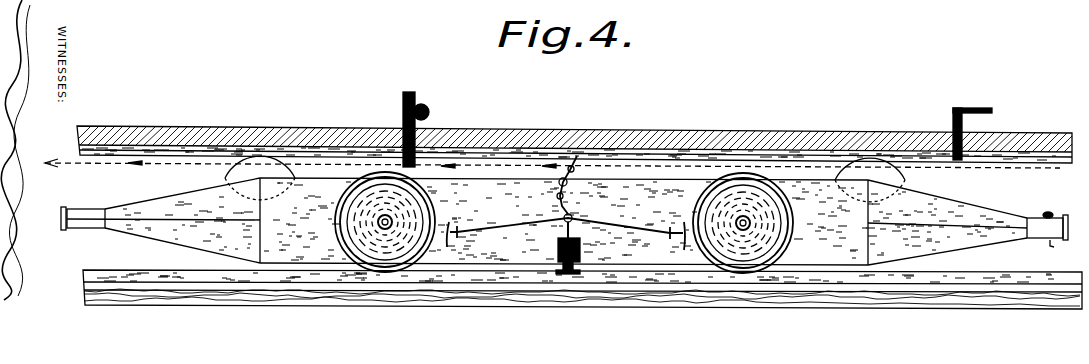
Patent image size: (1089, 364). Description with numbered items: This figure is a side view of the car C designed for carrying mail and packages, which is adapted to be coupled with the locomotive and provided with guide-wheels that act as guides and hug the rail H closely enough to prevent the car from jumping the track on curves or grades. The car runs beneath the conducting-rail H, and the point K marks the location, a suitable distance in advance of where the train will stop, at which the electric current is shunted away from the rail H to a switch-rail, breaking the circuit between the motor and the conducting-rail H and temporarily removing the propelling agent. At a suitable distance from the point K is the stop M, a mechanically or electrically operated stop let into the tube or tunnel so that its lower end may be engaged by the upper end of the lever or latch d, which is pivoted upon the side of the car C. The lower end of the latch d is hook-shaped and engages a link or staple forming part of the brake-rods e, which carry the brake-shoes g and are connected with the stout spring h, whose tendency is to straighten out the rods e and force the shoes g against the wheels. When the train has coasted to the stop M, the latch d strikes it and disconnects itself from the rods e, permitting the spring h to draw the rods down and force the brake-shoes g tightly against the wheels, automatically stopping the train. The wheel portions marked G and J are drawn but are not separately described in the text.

The stop M is at (401, 106).
The car C is at (643, 195).
The point K is at (952, 125).
The conducting-rail H is at (1010, 163).
The wheel G is at (908, 182).
The wheel J is at (237, 178).
The lever or latch d is at (577, 183).
The brake-rods e is at (563, 219).
The brake-shoes g is at (566, 222).
The spring h is at (582, 248).